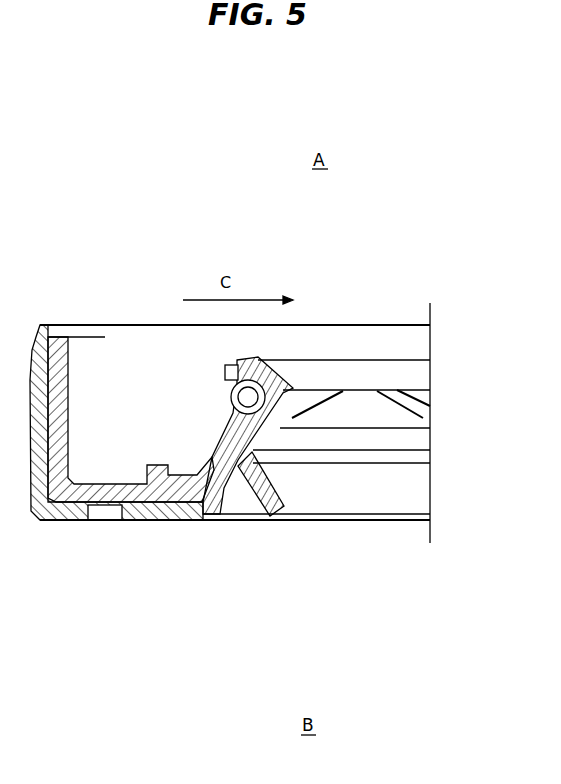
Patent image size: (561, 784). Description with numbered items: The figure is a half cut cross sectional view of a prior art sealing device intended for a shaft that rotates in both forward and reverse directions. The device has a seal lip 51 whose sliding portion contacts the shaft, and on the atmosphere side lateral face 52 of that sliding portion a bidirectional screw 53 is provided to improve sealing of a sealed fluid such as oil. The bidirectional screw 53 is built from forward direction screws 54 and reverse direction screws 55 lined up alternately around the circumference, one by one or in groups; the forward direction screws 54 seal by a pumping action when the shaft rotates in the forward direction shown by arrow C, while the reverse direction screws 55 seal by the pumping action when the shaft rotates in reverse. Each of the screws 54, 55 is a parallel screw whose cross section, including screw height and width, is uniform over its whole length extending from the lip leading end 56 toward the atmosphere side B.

The seal lip 51 is at (247, 363).
The atmosphere side lateral face 52 is at (260, 492).
The bidirectional screw 53 is at (367, 424).
The forward direction screw 54 is at (318, 402).
The reverse direction screw 55 is at (403, 405).
The lip leading end 56 is at (358, 390).